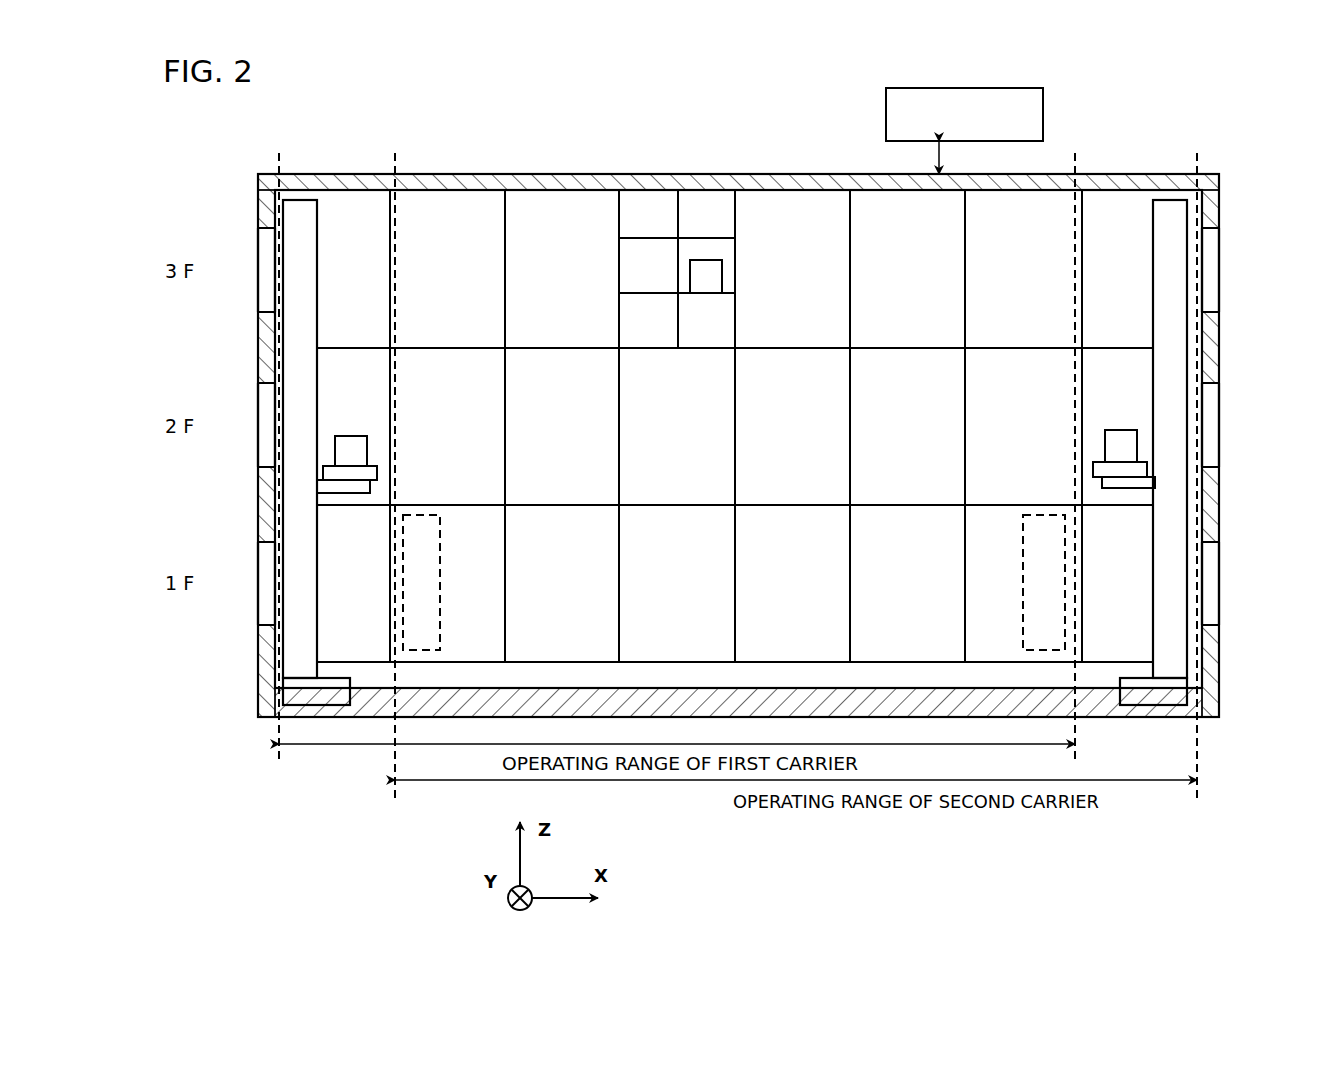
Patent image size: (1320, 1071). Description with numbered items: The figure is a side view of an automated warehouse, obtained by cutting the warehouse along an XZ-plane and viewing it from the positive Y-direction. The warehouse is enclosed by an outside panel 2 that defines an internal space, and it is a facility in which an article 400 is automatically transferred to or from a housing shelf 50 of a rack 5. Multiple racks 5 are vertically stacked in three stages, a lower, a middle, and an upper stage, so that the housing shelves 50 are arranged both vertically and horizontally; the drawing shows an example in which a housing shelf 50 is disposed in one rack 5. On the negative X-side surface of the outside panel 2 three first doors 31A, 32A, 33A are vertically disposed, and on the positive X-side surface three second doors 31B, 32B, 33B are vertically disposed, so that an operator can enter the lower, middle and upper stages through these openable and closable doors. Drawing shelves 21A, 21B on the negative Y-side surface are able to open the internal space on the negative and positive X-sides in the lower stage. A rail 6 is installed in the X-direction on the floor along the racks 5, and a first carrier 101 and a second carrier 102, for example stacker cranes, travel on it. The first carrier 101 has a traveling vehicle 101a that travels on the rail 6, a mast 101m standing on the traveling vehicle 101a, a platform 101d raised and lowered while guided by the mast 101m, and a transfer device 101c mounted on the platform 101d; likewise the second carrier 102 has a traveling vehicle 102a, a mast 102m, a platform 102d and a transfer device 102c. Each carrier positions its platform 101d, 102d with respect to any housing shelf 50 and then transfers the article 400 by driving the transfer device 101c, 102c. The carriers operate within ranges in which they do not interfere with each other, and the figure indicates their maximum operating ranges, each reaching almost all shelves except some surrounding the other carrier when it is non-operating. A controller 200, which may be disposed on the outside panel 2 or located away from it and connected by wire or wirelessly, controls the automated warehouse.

The outside panel 2 is at (788, 184).
The rack 5 is at (616, 216).
The rail 6 is at (664, 680).
The housing shelf 50 is at (704, 236).
The article 400 is at (723, 271).
The first carrier 101 is at (381, 457).
The mast 101m is at (300, 199).
The traveling vehicle 101a is at (328, 706).
The transfer device 101c is at (378, 472).
The platform 101d is at (350, 495).
The second carrier 102 is at (1131, 450).
The mast 102m is at (1170, 199).
The traveling vehicle 102a is at (1158, 706).
The transfer device 102c is at (1092, 470).
The platform 102d is at (1124, 490).
The drawing shelf 21A is at (442, 568).
The drawing shelf 21B is at (1022, 568).
The first door 31A is at (257, 580).
The first door 32A is at (257, 422).
The first door 33A is at (257, 250).
The second door 31B is at (1221, 580).
The second door 32B is at (1221, 422).
The second door 33B is at (1221, 250).
The controller 200 is at (1044, 114).